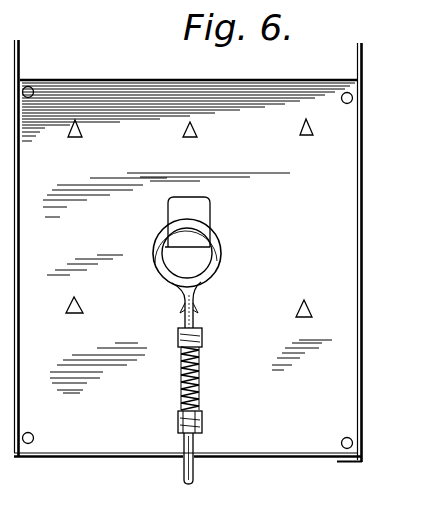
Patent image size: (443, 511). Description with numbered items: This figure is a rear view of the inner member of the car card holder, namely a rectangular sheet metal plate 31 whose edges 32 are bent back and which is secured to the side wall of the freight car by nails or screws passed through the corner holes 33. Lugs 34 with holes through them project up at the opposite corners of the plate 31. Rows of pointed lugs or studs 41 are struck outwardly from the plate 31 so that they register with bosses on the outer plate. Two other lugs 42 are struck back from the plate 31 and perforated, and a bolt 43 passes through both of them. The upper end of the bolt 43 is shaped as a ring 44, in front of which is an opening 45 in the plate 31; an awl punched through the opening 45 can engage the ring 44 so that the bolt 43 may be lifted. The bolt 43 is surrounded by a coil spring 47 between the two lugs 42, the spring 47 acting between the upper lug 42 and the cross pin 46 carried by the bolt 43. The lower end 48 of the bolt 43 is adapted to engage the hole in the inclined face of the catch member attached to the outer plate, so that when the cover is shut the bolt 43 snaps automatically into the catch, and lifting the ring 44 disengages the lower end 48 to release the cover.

The sheet metal plate 31 is at (188, 268).
The edges 32 is at (357, 188).
The corner holes 33 is at (34, 90).
The lugs 34 is at (22, 56).
The pointed lugs or studs 41 is at (72, 137).
The lugs 42 is at (196, 332).
The bolt 43 is at (193, 299).
The ring 44 is at (222, 254).
The opening 45 is at (187, 212).
The cross pin 46 is at (198, 420).
The coil spring 47 is at (197, 378).
The lower end 48 is at (194, 474).